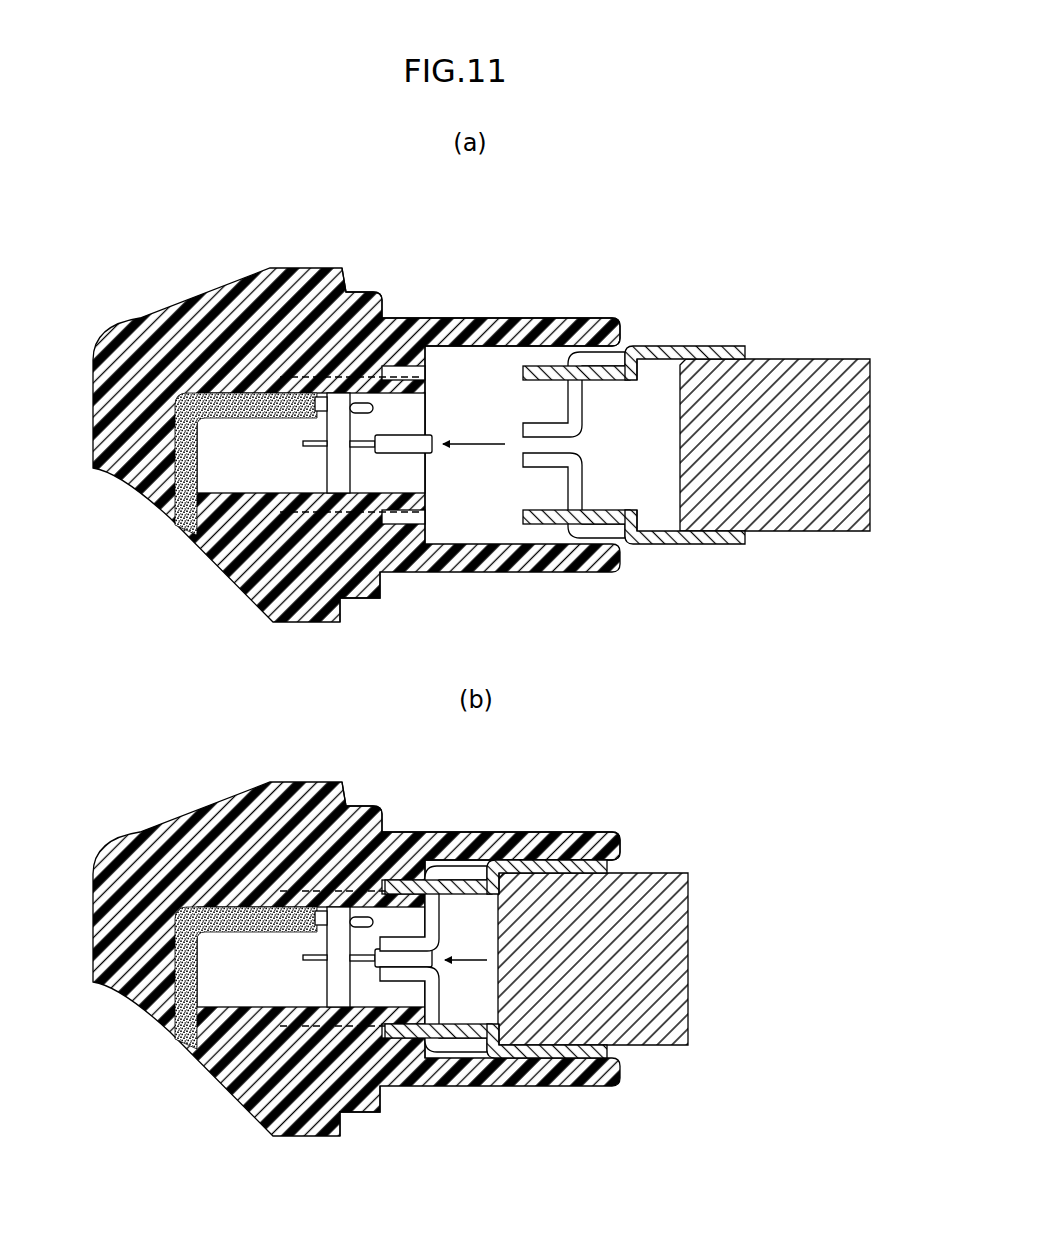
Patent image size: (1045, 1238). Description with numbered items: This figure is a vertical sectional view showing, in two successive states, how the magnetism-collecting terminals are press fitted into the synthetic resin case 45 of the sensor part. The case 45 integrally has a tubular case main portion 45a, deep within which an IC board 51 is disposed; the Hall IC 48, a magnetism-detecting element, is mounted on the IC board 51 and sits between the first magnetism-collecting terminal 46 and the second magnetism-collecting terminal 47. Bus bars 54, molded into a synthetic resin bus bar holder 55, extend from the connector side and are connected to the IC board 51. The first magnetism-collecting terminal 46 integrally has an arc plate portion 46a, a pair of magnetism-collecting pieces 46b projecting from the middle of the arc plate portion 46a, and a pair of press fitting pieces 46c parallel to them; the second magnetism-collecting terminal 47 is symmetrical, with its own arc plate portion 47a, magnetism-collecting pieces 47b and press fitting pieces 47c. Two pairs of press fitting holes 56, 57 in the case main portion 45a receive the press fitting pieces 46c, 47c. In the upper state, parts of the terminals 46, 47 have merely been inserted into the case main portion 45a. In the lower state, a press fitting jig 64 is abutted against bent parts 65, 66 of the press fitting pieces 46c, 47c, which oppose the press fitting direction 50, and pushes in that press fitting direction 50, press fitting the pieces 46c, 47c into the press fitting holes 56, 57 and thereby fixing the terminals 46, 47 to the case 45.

The case 45 is at (352, 279).
The case main portion 45a is at (555, 317).
The first magnetism-collecting terminal 46 is at (575, 801).
The arc plate portion 46a is at (697, 543).
The magnetism-collecting pieces 46b is at (574, 478).
The press fitting pieces 46c is at (543, 522).
The second magnetism-collecting terminal 47 is at (569, 605).
The arc plate portion 47a is at (698, 346).
The magnetism-collecting pieces 47b is at (574, 394).
The press fitting pieces 47c is at (535, 366).
The Hall IC 48 is at (393, 448).
The press fitting direction 50 is at (472, 441).
The IC board 51 is at (327, 474).
The bus bars 54 is at (377, 305).
The bus bar holder 55 is at (207, 425).
The press fitting holes 56 is at (401, 518).
The press fitting holes 57 is at (415, 349).
The press fitting jig 64 is at (792, 370).
The bent part 65 is at (639, 523).
The bent part 66 is at (638, 369).